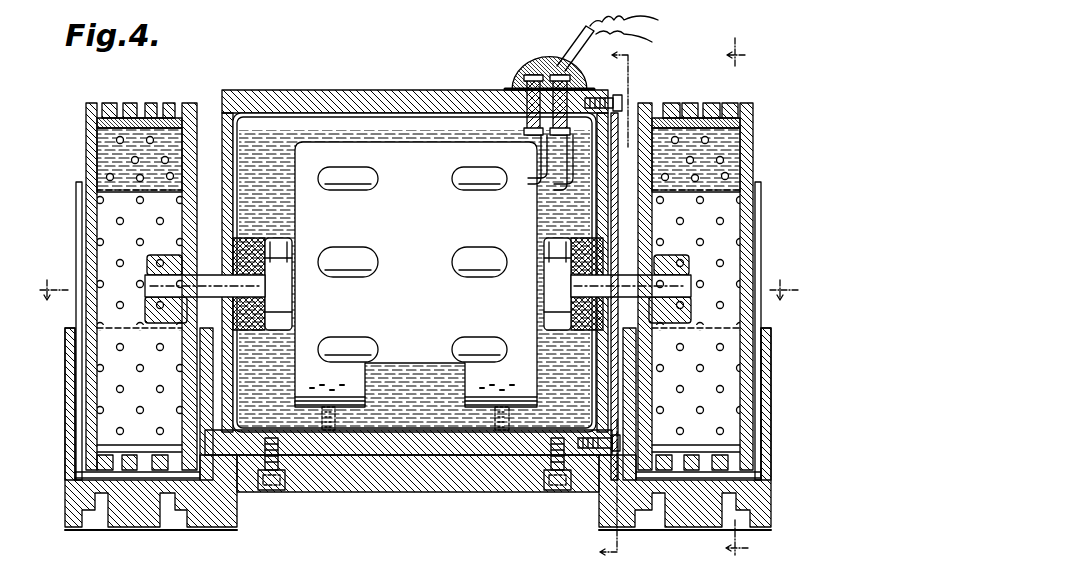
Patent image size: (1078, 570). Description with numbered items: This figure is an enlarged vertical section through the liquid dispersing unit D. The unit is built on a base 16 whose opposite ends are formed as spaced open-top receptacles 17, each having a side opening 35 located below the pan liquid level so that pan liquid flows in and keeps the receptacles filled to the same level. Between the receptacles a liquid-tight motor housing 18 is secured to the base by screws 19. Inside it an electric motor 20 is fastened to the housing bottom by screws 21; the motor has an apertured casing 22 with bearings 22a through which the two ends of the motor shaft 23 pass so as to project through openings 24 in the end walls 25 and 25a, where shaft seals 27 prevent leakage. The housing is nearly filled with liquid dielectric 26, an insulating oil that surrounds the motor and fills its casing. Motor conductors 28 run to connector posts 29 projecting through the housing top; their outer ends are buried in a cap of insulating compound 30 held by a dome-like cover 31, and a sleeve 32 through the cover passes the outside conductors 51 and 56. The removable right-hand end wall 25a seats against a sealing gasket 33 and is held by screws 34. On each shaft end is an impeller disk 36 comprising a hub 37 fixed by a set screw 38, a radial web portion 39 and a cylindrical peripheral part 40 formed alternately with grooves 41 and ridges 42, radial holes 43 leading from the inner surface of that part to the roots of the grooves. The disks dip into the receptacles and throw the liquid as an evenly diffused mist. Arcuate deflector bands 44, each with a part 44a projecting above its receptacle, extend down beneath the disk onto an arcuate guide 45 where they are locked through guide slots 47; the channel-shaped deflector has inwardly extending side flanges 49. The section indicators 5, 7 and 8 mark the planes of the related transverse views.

The dispersing unit D is at (397, 86).
The base 16 is at (412, 452).
The open-top receptacles 17 is at (65, 445).
The motor housing 18 is at (425, 142).
The screws 19 is at (272, 492).
The electric motor 20 is at (292, 140).
The screws 21 is at (338, 420).
The apertured casing 22 is at (335, 150).
The bearings 22a is at (290, 246).
The motor shaft 23 is at (265, 292).
The openings 24 is at (262, 238).
The end wall 25 is at (222, 128).
The right-hand end wall 25a is at (560, 388).
The liquid dielectric 26 is at (247, 130).
The shaft seals 27 is at (265, 270).
The motor conductors 28 is at (540, 160).
The connector posts 29 is at (516, 82).
The cap of insulating compound 30 is at (522, 78).
The dome-like cover 31 is at (540, 60).
The sleeve 32 is at (572, 40).
The sealing gasket 33 is at (628, 85).
The screws 34 is at (622, 100).
The side openings 35 is at (65, 415).
The disks 36 is at (85, 99).
The hub 37 is at (143, 276).
The set screws 38 is at (162, 258).
The web portion 39 is at (182, 354).
The peripheral part 40 is at (97, 123).
The grooves 41 is at (128, 103).
The ridges 42 is at (168, 103).
The radial holes 43 is at (105, 150).
The deflector bands 44 is at (69, 321).
The projecting part 44a is at (76, 222).
The arcuate guide 45 is at (135, 522).
The guide slots 47 is at (98, 518).
The side flanges 49 is at (752, 472).
The conductor 51 is at (637, 20).
The wire 56 is at (636, 41).
The motor 5 is at (415, 290).
The section line 7- 7 is at (737, 292).
The section line 8- 8 is at (606, 301).